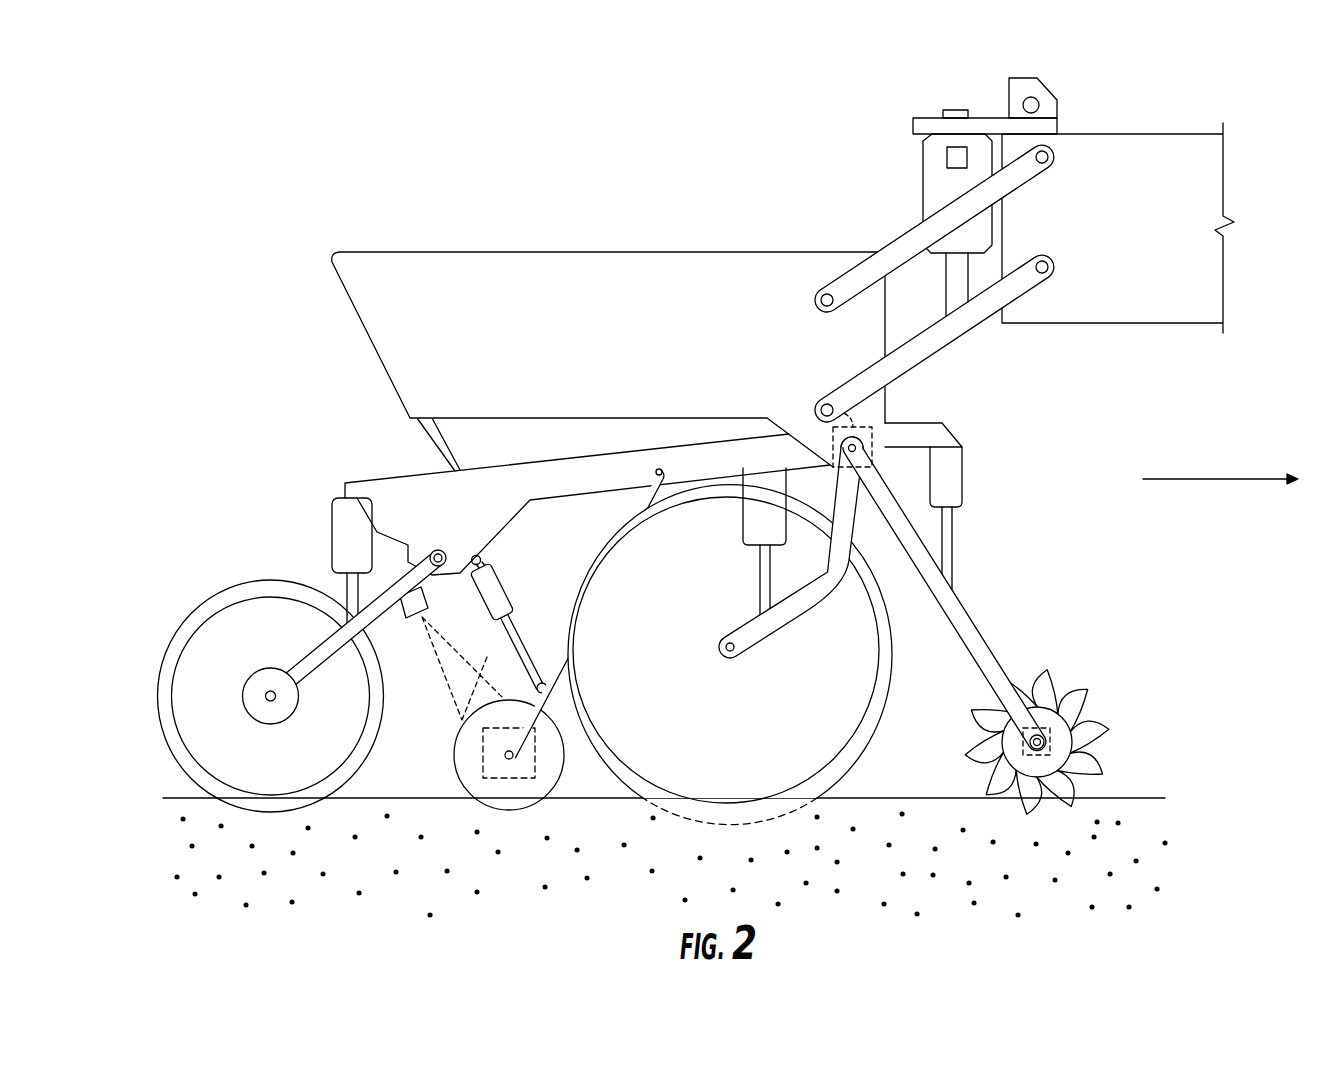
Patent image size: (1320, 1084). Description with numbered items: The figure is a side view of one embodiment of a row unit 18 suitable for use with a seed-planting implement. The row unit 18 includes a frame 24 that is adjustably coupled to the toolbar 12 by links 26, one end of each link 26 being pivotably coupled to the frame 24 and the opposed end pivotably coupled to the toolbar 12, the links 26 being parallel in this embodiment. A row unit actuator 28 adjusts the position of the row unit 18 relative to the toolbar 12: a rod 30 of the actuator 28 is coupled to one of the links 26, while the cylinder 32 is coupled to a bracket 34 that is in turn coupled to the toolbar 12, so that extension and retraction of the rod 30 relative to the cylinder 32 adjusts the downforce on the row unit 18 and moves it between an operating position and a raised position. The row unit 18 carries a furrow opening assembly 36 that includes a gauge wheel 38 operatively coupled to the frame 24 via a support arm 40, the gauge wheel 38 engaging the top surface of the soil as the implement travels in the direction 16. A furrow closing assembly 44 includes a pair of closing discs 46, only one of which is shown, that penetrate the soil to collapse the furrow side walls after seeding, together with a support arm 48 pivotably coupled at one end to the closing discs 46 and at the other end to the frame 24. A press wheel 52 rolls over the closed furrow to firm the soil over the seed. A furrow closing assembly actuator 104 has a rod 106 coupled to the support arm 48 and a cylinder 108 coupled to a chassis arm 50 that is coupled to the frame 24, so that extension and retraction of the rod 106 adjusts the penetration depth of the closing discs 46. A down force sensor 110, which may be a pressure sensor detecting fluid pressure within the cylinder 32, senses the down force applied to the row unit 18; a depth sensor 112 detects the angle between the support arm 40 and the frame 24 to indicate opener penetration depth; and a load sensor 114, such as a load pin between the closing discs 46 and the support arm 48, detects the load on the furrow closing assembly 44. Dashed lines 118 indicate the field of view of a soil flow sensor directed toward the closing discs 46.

The toolbar 12 is at (1087, 323).
The direction of travel 16 is at (1222, 478).
The row unit 18 is at (356, 152).
The frame 24 is at (628, 251).
The links 26 is at (1027, 188).
The row unit actuator 28 is at (908, 198).
The rod 30 is at (947, 283).
The cylinder 32 is at (922, 173).
The bracket 34 is at (1047, 86).
The furrow opening assembly 36 is at (853, 776).
The gauge wheel 38 is at (712, 701).
The support arm 40 is at (782, 647).
The furrow closing assembly 44 is at (498, 757).
The closing discs 46 is at (456, 783).
The support arm 48 is at (566, 677).
The chassis arm 50 is at (382, 480).
The press wheel 52 is at (160, 692).
The furrow closing assembly actuator 104 is at (514, 580).
The rod 106 is at (530, 642).
The cylinder 108 is at (492, 559).
The down force sensor 110 is at (960, 145).
The depth sensor 112 is at (826, 398).
The load sensor 114 is at (536, 770).
The dashed lines 118 is at (451, 653).